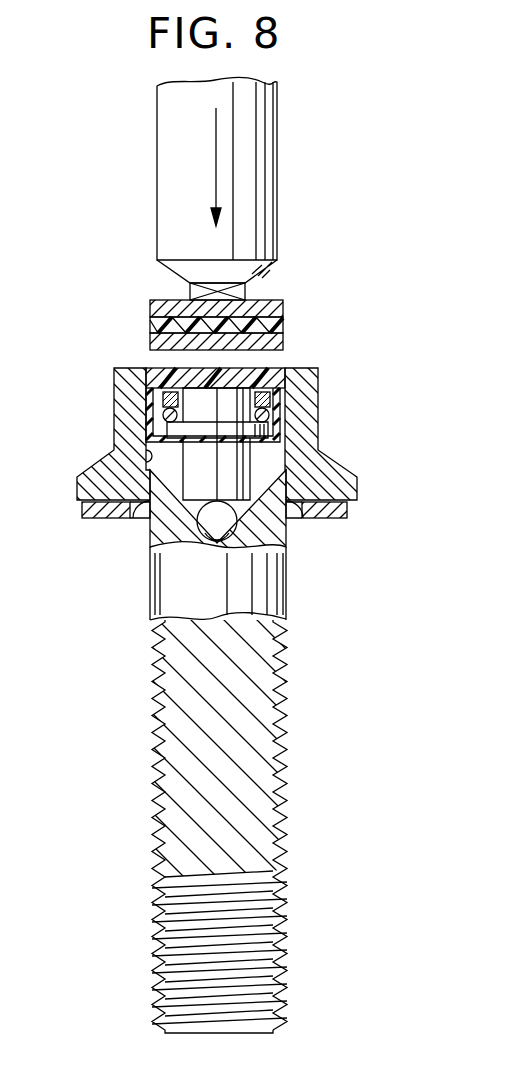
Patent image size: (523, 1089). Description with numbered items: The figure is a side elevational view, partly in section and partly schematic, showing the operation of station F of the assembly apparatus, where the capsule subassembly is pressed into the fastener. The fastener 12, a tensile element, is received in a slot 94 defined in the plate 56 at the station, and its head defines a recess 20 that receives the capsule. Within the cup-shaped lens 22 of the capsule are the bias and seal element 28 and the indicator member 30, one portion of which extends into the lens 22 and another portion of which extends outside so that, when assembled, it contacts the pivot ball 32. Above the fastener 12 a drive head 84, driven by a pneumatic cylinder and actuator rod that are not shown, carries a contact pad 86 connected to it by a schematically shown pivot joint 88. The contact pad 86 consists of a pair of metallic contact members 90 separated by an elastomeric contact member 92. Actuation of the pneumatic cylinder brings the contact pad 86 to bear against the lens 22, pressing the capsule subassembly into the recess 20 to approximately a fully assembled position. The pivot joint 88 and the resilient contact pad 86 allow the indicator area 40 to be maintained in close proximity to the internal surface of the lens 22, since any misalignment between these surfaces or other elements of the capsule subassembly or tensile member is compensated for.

The fastener 12 is at (147, 812).
The recess 20 is at (150, 470).
The lens 22 is at (270, 368).
The bias and seal element 28 is at (164, 418).
The indicator member 30 is at (238, 458).
The pivot ball 32 is at (208, 530).
The indicator area 40 is at (215, 368).
The plate 56 is at (82, 512).
The drive head 84 is at (257, 173).
The contact pad 86 is at (216, 305).
The pivot joint 88 is at (188, 290).
The metallic contact members 90 is at (150, 305).
The elastomeric contact member 92 is at (150, 323).
The slot 94 is at (137, 518).